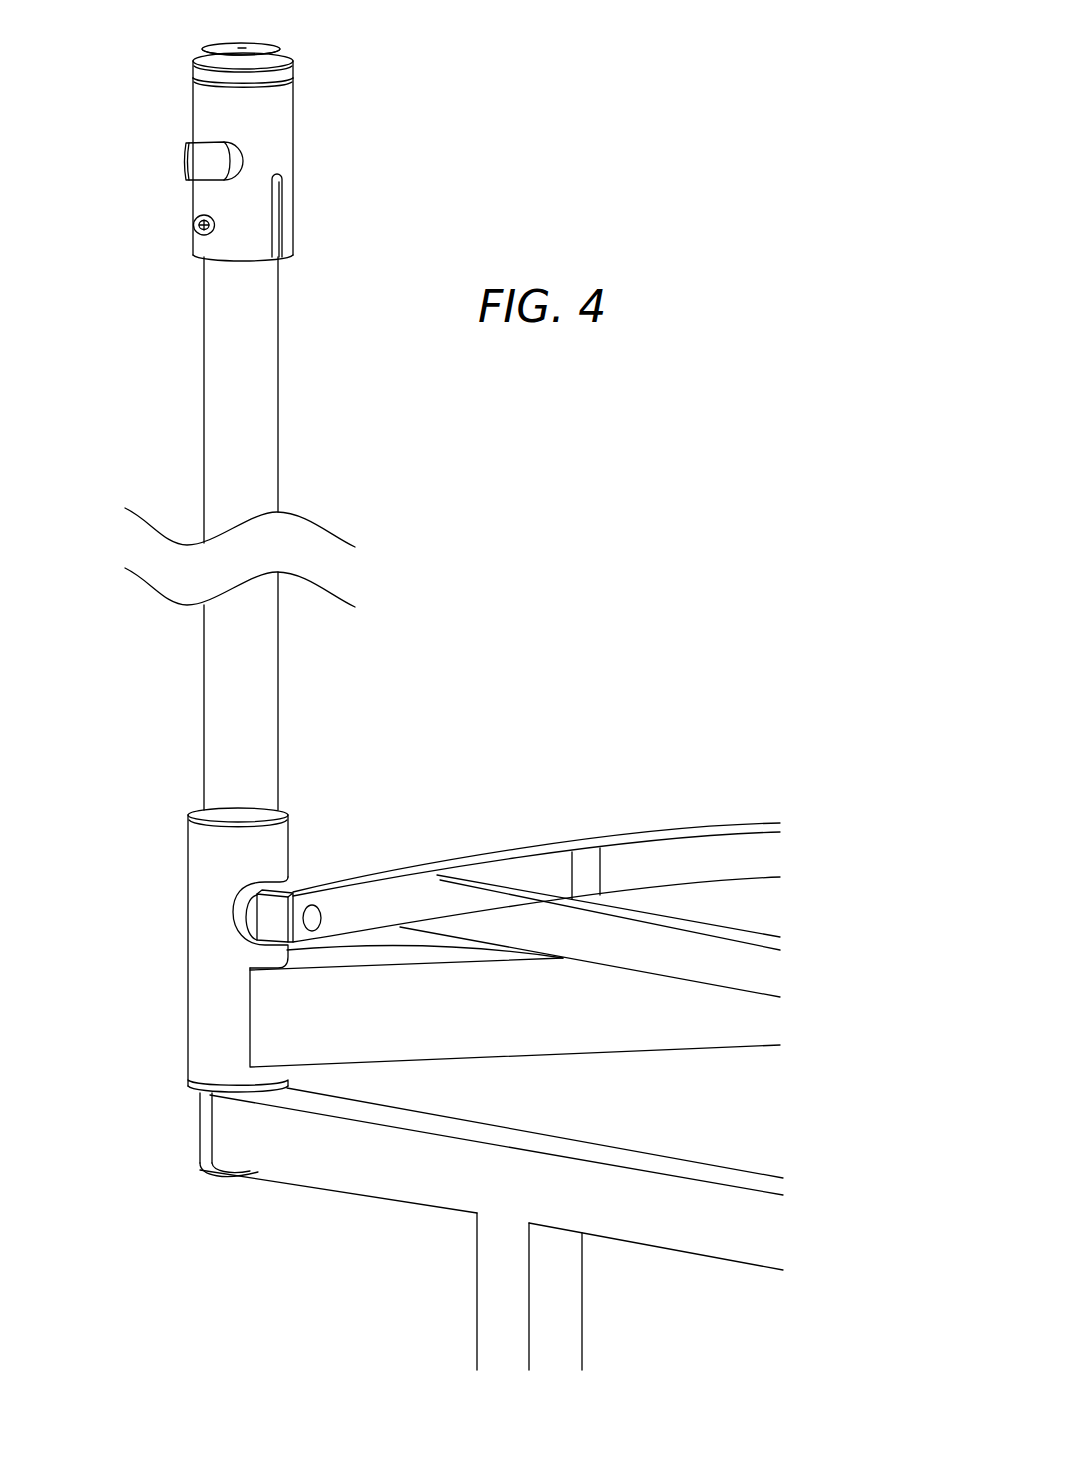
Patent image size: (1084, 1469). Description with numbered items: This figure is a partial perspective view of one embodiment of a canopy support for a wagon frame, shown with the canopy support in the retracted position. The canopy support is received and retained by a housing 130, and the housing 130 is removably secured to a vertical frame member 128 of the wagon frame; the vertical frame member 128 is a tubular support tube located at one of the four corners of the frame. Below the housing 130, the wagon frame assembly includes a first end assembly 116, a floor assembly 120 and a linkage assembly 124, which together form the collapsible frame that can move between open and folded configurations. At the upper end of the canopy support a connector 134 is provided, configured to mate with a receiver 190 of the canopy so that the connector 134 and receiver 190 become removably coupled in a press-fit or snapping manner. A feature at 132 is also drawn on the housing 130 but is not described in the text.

The receiver 190 is at (253, 48).
The connector 134 is at (285, 62).
The housing 130 is at (285, 148).
The push button 132 is at (197, 155).
The vertical frame member 128 is at (245, 372).
The floor assembly 120 is at (628, 862).
The linkage assembly 124 is at (413, 1008).
The first end assembly 116 is at (343, 1153).